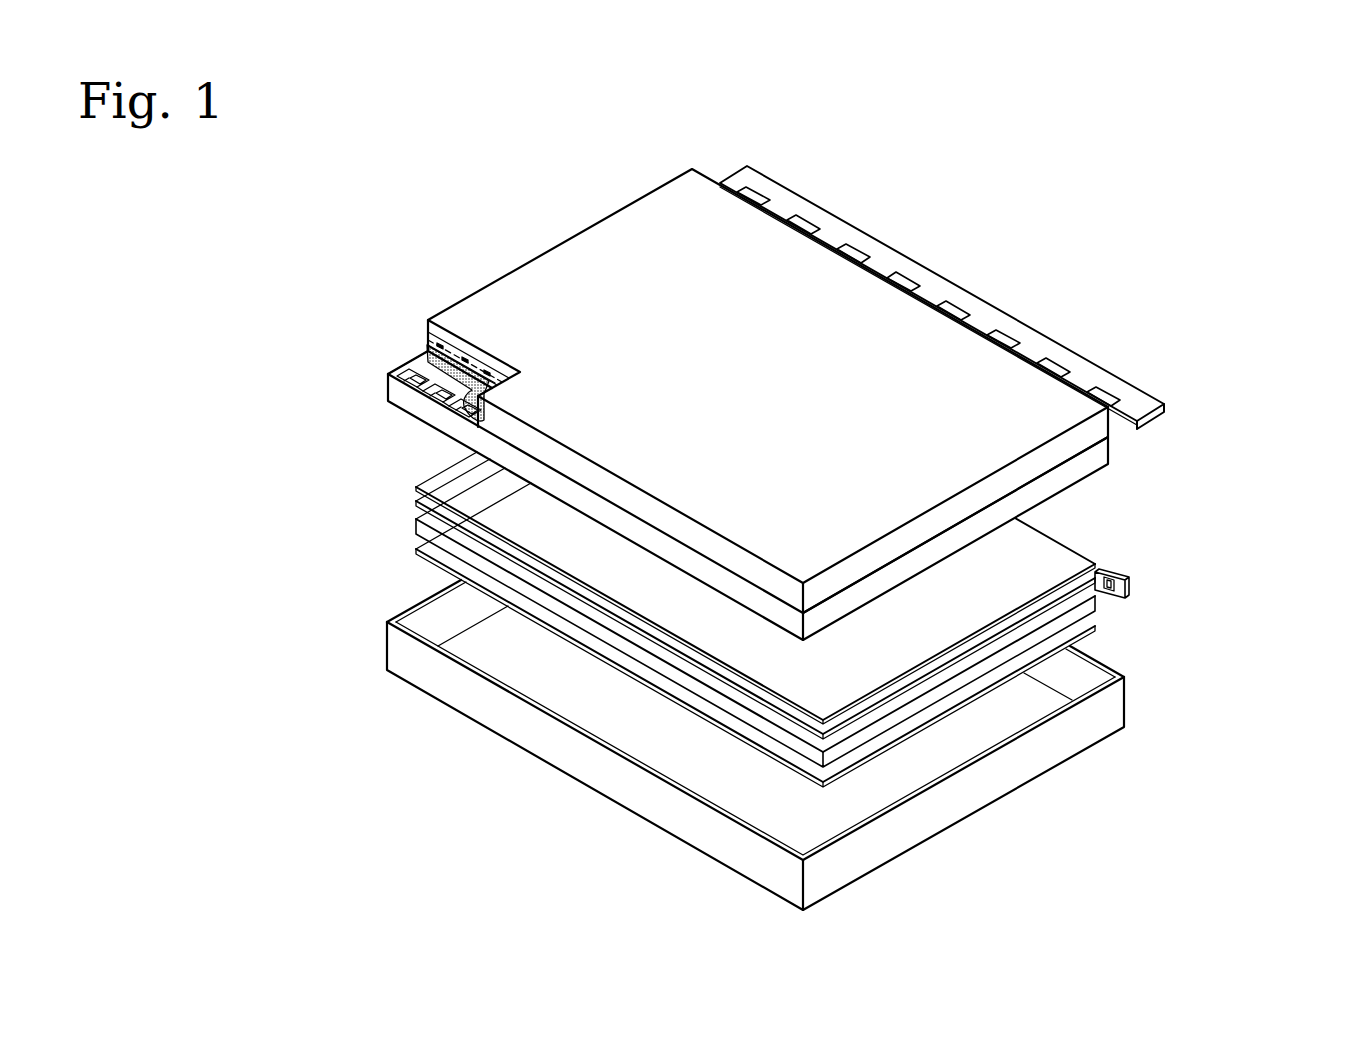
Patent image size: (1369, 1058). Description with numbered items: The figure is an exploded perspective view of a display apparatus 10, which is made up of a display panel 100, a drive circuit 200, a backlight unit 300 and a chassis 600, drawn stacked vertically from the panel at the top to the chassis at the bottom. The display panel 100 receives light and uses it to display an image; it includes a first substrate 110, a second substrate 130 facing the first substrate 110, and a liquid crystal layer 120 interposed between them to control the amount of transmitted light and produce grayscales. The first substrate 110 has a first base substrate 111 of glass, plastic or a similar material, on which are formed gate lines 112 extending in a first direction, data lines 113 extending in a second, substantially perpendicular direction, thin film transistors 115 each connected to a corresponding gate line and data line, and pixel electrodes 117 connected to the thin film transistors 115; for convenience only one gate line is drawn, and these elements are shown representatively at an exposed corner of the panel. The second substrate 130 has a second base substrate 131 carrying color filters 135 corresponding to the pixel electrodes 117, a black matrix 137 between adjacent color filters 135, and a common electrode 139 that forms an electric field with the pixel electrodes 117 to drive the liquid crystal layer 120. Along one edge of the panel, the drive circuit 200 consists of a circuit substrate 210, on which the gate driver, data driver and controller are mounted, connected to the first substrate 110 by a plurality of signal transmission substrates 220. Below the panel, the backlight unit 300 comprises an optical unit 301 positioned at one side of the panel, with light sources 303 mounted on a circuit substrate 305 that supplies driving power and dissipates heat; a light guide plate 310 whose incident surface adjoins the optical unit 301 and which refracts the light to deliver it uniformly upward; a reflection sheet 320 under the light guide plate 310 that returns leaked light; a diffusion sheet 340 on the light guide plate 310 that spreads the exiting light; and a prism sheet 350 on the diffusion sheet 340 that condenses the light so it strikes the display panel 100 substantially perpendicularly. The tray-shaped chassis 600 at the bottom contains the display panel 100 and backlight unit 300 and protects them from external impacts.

The display apparatus 10 is at (1057, 238).
The display panel 100 is at (288, 280).
The first substrate 110 is at (387, 390).
The first base substrate 111 is at (447, 420).
The gate lines 112 is at (427, 342).
The data lines 113 is at (416, 369).
The thin film transistors 115 is at (392, 405).
The pixel electrodes 117 is at (422, 388).
The liquid crystal layer 120 is at (427, 347).
The second substrate 130 is at (473, 292).
The second base substrate 131 is at (488, 360).
The color filters 135 is at (472, 357).
The black matrix 137 is at (498, 373).
The common electrode 139 is at (493, 390).
The drive circuit 200 is at (1093, 318).
The circuit substrate 210 is at (1144, 406).
The signal transmission substrates 220 is at (1103, 400).
The backlight unit 300 is at (1268, 505).
The optical unit 301 is at (1208, 558).
The light sources 303 is at (1118, 574).
The circuit substrate 305 is at (1128, 589).
The light guide plate 310 is at (1097, 604).
The reflection sheet 320 is at (1097, 628).
The diffusion sheet 340 is at (1100, 572).
The prism sheet 350 is at (1097, 548).
The chassis 600 is at (1113, 705).